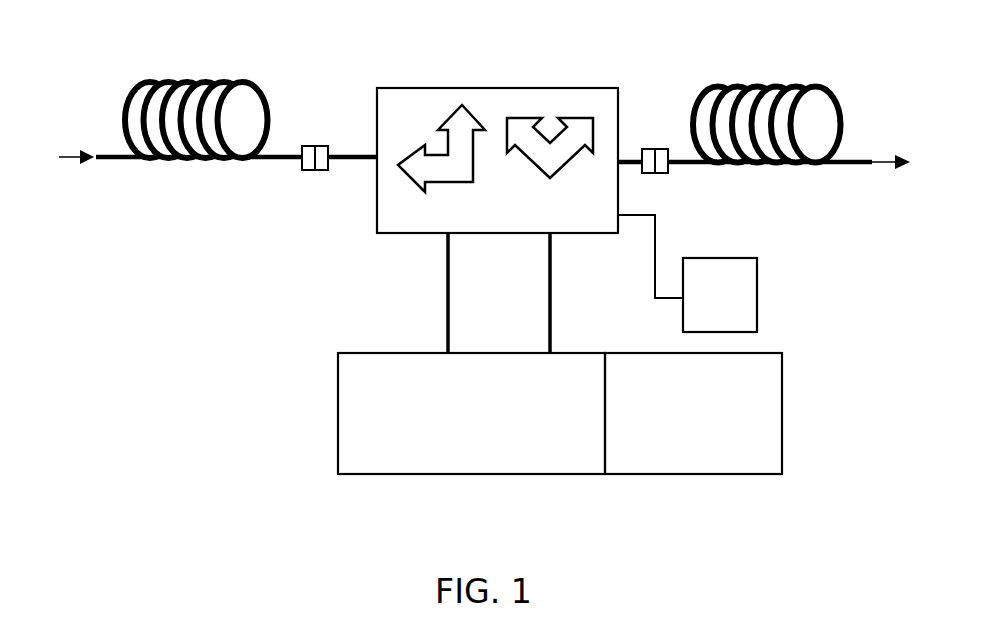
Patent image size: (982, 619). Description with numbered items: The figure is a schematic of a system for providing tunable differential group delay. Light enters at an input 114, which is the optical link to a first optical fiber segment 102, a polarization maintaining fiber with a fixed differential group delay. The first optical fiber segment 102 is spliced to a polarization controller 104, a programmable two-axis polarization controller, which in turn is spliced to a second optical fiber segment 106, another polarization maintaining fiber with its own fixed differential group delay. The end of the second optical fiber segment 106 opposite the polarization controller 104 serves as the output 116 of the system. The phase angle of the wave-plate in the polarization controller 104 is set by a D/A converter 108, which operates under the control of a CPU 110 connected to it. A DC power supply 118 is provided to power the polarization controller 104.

The first optical fiber segment 102 is at (222, 160).
The polarization controller 104 is at (515, 220).
The second optical fiber segment 106 is at (788, 165).
The D/A converter 108 is at (492, 426).
The CPU 110 is at (713, 428).
The input 114 is at (72, 158).
The output 116 is at (885, 163).
The DC power supply 118 is at (740, 310).